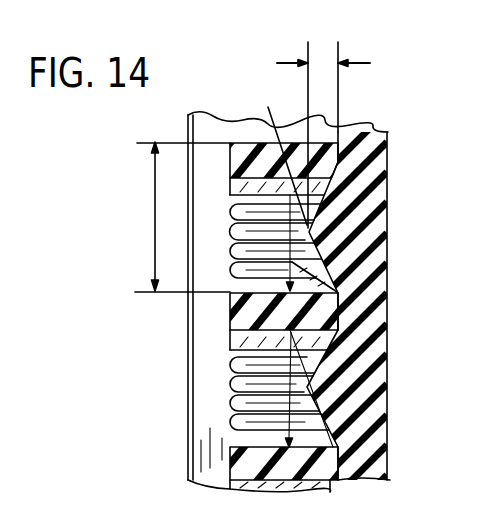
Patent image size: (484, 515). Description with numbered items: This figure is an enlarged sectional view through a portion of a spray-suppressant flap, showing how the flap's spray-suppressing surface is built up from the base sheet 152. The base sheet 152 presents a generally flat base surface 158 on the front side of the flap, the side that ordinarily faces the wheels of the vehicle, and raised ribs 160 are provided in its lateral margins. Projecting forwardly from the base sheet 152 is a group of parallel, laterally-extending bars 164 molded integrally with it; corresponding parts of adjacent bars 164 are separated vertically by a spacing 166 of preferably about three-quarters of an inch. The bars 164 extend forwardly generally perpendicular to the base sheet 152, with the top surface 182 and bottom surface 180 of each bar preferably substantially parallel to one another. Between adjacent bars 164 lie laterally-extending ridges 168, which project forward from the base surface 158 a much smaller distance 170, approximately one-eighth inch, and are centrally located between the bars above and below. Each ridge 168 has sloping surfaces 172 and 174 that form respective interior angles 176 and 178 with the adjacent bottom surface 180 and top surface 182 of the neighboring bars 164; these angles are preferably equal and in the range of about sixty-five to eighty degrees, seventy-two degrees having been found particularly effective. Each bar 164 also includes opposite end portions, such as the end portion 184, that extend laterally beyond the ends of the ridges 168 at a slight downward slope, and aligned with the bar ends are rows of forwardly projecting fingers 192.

The base sheet 152 is at (367, 129).
The base surface 158 is at (343, 123).
The raised ribs 160 is at (222, 122).
The bars 164 is at (232, 160).
The spacing 166 is at (228, 203).
The ridges 168 is at (232, 248).
The distance 170 is at (325, 62).
The sloping surface 172 is at (294, 267).
The sloping surface 174 is at (262, 272).
The interior angle 176 is at (352, 170).
The interior angle 178 is at (352, 255).
The bottom surface 180 is at (232, 222).
The top surface 182 is at (242, 142).
The end portion 184 is at (232, 188).
The fingers 192 is at (240, 386).